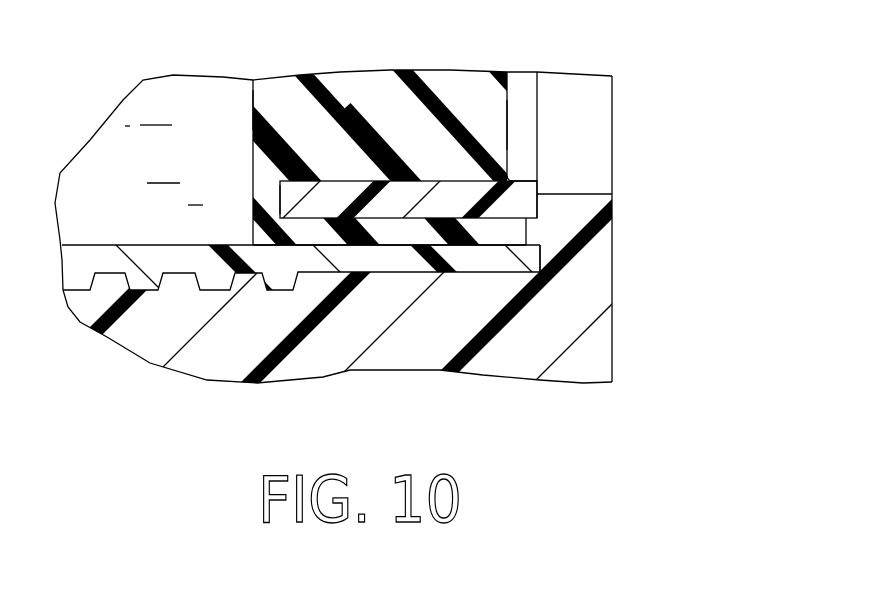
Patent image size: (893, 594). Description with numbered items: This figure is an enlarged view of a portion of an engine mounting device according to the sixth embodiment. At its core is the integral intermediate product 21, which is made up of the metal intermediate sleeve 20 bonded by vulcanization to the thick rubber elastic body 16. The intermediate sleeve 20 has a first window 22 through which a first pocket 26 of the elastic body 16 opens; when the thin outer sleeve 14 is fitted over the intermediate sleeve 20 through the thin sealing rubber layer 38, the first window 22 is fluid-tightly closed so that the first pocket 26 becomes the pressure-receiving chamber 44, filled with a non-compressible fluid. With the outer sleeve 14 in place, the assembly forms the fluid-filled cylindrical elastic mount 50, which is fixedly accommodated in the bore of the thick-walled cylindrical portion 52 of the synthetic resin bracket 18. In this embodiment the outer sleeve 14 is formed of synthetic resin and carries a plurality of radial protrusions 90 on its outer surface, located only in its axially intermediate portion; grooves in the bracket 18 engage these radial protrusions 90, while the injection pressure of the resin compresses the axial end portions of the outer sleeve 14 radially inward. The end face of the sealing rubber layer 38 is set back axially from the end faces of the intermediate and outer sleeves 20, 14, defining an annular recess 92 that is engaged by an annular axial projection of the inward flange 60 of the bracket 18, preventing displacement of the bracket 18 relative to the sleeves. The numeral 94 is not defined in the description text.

The outer sleeve 14 is at (390, 263).
The elastic body 16 is at (435, 77).
The bracket 18 is at (642, 325).
The intermediate sleeve 20 is at (330, 197).
The integral intermediate product 21 is at (524, 117).
The first window 22 is at (280, 197).
The first pocket 26 is at (252, 108).
The sealing rubber layer 38 is at (423, 230).
The pressure-receiving chamber 44 is at (100, 158).
The fluid-filled cylindrical elastic mount 50 is at (485, 303).
The cylindrical portion 52 is at (335, 347).
The inward flange 60 is at (582, 200).
The radial protrusions 90 is at (80, 282).
The annular recesses 92 is at (535, 238).
The contact surface 94 is at (533, 240).